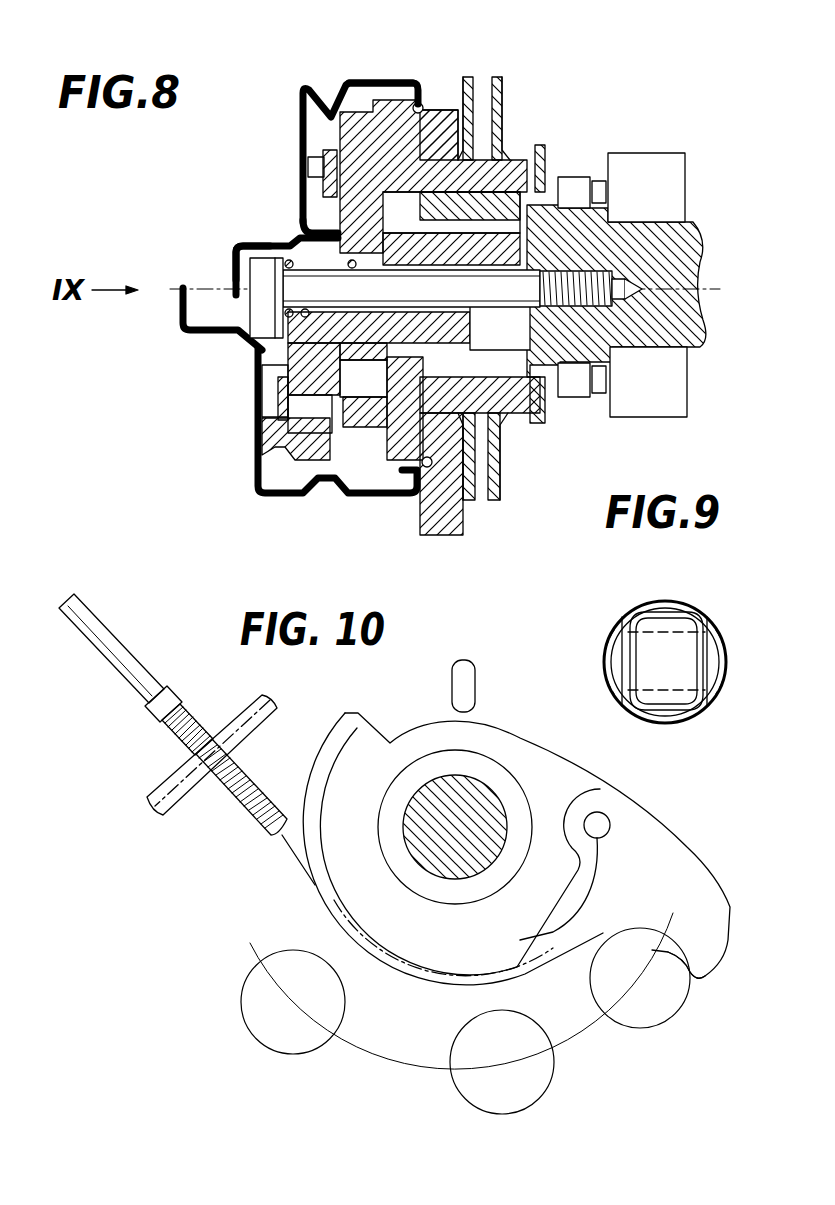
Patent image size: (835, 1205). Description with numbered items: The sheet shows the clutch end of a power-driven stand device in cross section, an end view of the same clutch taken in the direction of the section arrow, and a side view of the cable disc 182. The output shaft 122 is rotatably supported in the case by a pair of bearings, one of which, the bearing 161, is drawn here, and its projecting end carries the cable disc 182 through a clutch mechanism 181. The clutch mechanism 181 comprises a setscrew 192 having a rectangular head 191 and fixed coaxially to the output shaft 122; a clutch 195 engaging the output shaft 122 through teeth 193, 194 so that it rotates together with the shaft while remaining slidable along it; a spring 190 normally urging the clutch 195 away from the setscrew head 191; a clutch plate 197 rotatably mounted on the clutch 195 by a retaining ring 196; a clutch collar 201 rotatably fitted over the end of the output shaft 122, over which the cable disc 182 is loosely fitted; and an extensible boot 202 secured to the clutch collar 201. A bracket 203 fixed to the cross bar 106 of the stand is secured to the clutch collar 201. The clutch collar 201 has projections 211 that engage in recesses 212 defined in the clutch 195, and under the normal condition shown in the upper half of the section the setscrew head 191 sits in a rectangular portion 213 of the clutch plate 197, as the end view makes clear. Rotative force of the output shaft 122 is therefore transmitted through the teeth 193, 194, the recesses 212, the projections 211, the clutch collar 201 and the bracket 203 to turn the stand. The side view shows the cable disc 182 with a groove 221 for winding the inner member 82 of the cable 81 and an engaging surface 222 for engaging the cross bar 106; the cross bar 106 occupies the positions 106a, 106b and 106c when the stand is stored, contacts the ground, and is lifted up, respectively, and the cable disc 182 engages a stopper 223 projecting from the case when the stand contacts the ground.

In FIG. 10, the cable 81 is at (153, 624).
In FIG. 10, the inner member 82 is at (298, 862).
In FIG. 10, the cross bar 106 is at (678, 992).
In FIG. 10, the cross bar position when stand is stored 106a is at (662, 1028).
In FIG. 10, the cross bar position when stand contacts ground 106b is at (546, 1115).
In FIG. 10, the cross bar position when stand is lifted up 106c is at (312, 1055).
In FIG. 8, the output shaft 122 is at (755, 201).
In FIG. 8, the bearing 161 is at (680, 393).
In FIG. 8, the clutch mechanism 181 is at (297, 74).
In FIG. 8, the cable disc 182 is at (519, 72).
In FIG. 10, the cable disc 182 is at (695, 830).
In FIG. 8, the spring 190 is at (322, 252).
In FIG. 8, the rectangular head 191 is at (249, 247).
In FIG. 8, the setscrew 192 is at (258, 306).
In FIG. 8, the teeth 193 is at (495, 332).
In FIG. 8, the teeth 194 is at (366, 352).
In FIG. 8, the clutch 195 is at (495, 236).
In FIG. 8, the retaining ring 196 is at (316, 172).
In FIG. 8, the clutch plate 197 is at (268, 243).
In FIG. 9, the clutch plate 197 is at (658, 612).
In FIG. 8, the clutch collar 201 is at (430, 118).
In FIG. 8, the extensible boot 202 is at (368, 78).
In FIG. 8, the bracket 203 is at (462, 515).
In FIG. 8, the projections 211 is at (340, 440).
In FIG. 8, the recesses 212 is at (303, 457).
In FIG. 8, the rectangular portion 213 is at (236, 270).
In FIG. 9, the rectangular portion 213 is at (676, 622).
In FIG. 10, the groove 221 is at (423, 978).
In FIG. 10, the engaging surface 222 is at (677, 950).
In FIG. 10, the stopper 223 is at (472, 682).